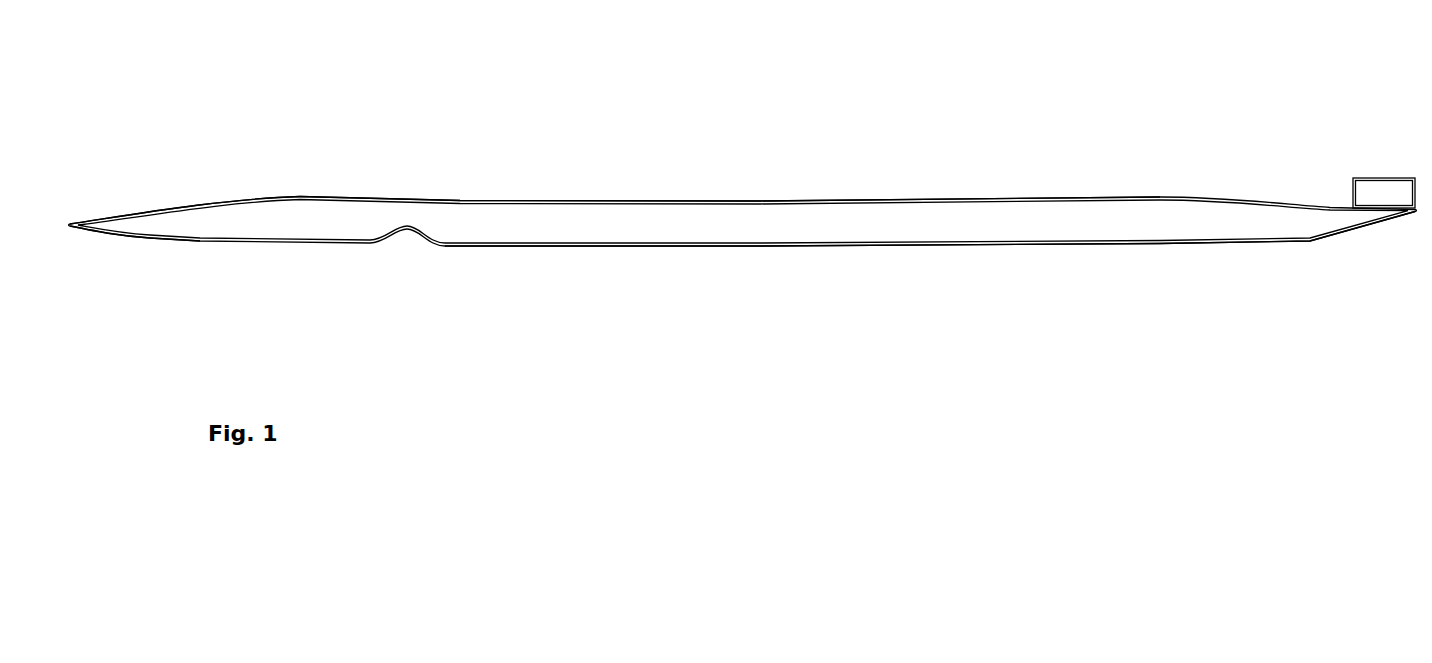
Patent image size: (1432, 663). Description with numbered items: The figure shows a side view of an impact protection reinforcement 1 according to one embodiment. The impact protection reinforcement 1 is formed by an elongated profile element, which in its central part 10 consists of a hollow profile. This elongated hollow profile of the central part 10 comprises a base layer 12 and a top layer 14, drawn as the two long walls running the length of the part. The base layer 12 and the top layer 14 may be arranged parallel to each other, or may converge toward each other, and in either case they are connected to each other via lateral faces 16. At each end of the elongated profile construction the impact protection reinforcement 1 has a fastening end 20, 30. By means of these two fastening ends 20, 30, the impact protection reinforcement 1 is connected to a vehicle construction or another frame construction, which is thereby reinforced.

The impact protection reinforcement 1 is at (1144, 61).
The central part 10 is at (1190, 245).
The base layer 12 is at (1013, 200).
The top layer 14 is at (947, 246).
The lateral faces 16 is at (612, 228).
The fastening end 20 is at (173, 242).
The fastening end 30 is at (1377, 178).